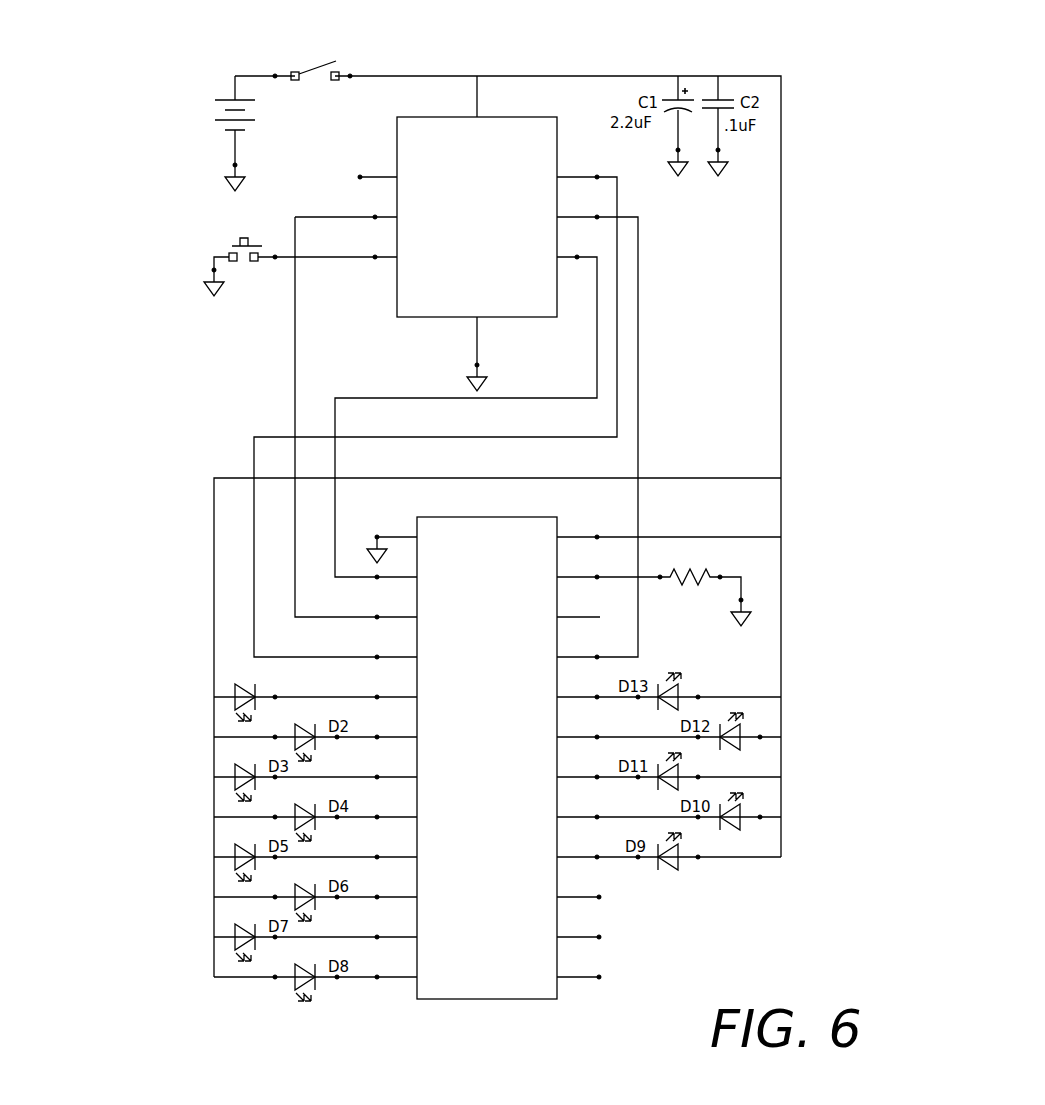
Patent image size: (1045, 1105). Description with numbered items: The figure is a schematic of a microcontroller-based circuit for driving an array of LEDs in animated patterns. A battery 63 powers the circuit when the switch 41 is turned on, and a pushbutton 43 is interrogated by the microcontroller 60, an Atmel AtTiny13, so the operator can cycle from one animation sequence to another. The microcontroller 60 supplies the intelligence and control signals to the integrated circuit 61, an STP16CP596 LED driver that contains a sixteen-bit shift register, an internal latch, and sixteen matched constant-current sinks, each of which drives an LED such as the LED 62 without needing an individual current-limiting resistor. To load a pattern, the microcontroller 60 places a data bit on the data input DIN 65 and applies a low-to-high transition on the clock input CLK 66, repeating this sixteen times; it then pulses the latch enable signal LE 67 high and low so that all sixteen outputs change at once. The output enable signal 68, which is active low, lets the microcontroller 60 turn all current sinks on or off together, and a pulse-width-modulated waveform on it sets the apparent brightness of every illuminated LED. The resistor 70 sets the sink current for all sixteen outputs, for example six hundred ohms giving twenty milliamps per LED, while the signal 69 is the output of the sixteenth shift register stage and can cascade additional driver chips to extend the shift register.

The switch 41 is at (305, 72).
The pushbutton 43 is at (243, 240).
The microcontroller 60 is at (523, 117).
The integrated circuit 61 is at (492, 999).
The LED 62 is at (246, 690).
The battery 63 is at (225, 133).
The data input DIN 65 is at (358, 395).
The clock input CLK 66 is at (295, 398).
The latch enable signal LE 67 is at (268, 435).
The output enable signal 68 is at (639, 342).
The shift register output signal 69 is at (581, 618).
The resistor 70 is at (708, 572).